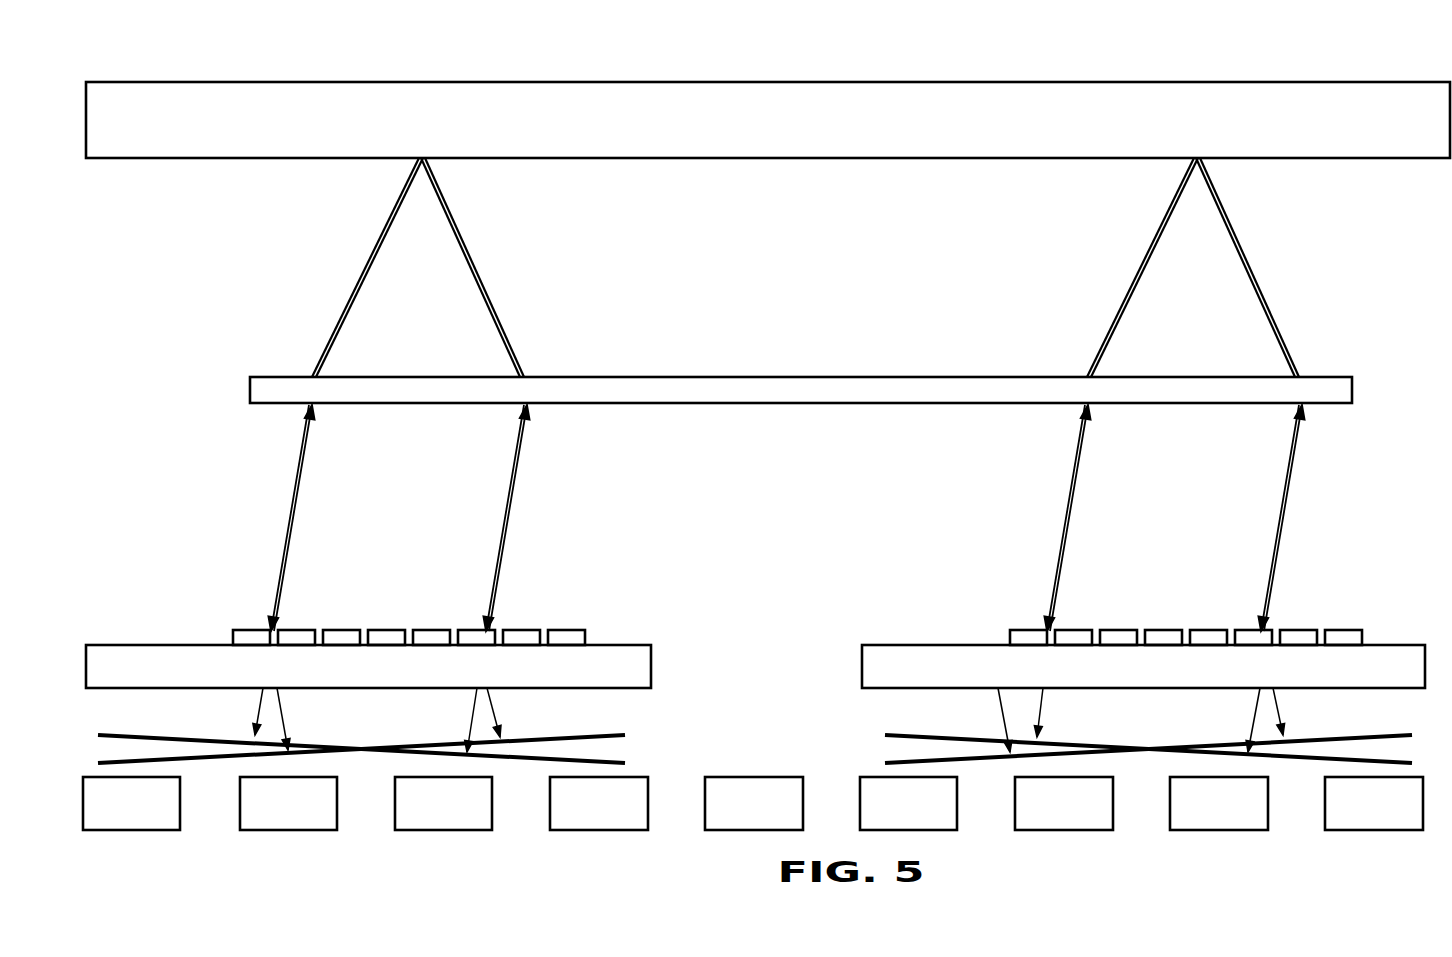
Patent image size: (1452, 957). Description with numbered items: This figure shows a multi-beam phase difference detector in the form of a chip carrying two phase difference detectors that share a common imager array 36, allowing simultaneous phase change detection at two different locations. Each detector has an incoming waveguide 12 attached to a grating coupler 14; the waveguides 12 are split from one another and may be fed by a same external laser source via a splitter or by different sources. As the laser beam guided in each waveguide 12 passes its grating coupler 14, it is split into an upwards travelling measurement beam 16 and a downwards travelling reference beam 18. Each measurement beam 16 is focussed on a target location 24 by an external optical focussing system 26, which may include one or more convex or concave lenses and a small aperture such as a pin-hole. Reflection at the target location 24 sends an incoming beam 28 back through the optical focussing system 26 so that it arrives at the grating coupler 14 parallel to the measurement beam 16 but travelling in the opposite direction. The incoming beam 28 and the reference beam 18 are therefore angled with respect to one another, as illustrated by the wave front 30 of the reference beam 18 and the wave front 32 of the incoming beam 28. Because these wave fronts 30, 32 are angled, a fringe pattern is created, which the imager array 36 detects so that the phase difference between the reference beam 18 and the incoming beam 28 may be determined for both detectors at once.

The incoming waveguide 12 is at (140, 653).
The grating coupler 14 is at (346, 630).
The measurement beam 16 is at (513, 492).
The reference beam 18 is at (495, 710).
The target location 24 is at (798, 100).
The external optical focussing system 26 is at (798, 390).
The incoming beam 28 is at (507, 485).
The wave front of the reference beam 30 is at (598, 733).
The wave front of the incoming beam 32 is at (157, 738).
The imager array 36 is at (455, 818).